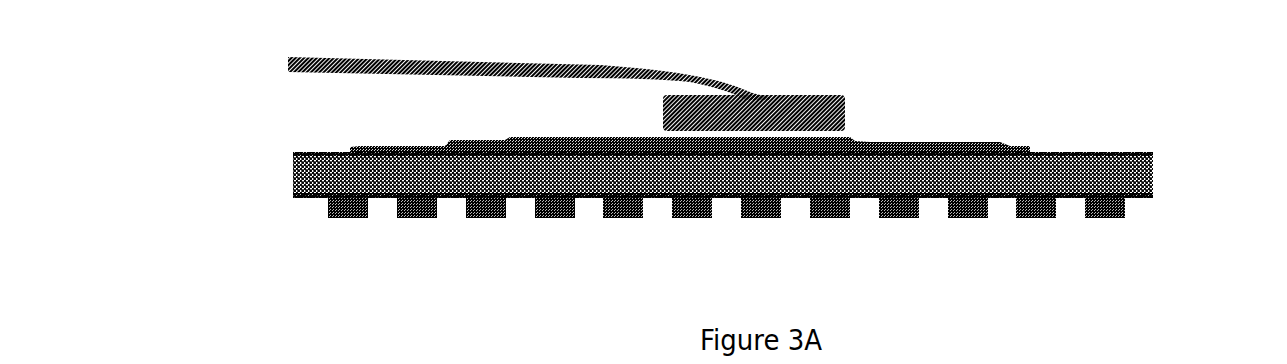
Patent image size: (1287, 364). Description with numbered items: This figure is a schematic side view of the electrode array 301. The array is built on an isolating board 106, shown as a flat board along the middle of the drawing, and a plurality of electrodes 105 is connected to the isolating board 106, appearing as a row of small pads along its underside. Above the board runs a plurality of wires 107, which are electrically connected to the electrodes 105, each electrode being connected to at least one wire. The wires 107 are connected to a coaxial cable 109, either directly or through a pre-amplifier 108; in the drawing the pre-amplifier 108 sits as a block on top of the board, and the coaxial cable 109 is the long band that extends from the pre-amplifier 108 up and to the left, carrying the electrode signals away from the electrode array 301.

The electrode array 301 is at (691, 40).
The electrodes 105 is at (353, 213).
The isolating board 106 is at (1072, 178).
The wires 107 is at (845, 143).
The pre-amplifier 108 is at (668, 105).
The coaxial cable 109 is at (318, 73).